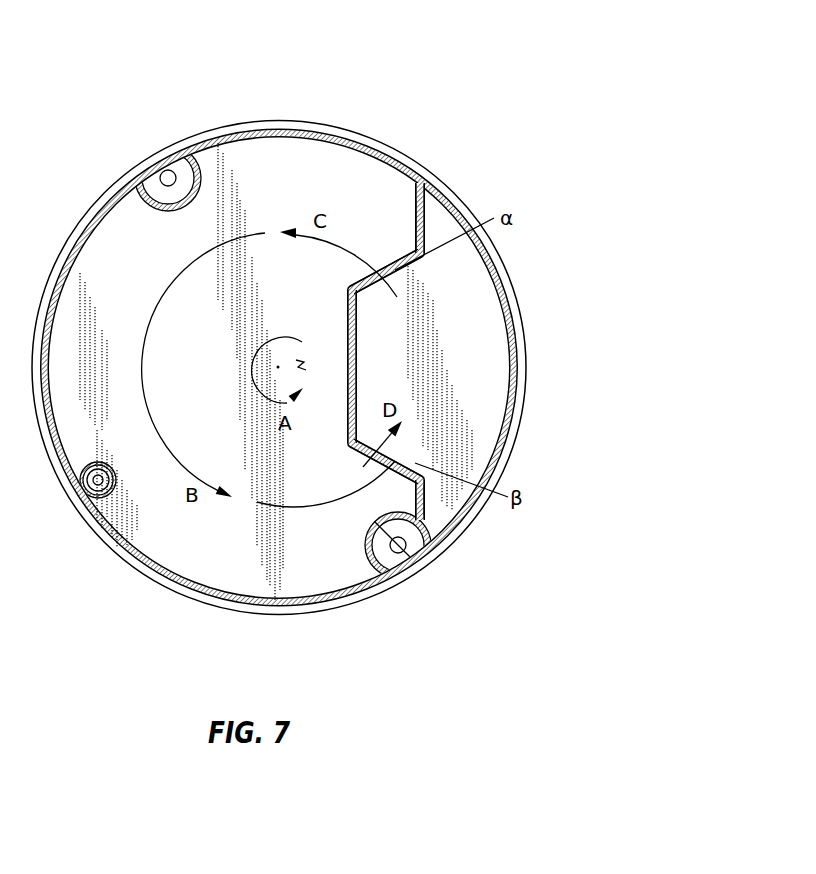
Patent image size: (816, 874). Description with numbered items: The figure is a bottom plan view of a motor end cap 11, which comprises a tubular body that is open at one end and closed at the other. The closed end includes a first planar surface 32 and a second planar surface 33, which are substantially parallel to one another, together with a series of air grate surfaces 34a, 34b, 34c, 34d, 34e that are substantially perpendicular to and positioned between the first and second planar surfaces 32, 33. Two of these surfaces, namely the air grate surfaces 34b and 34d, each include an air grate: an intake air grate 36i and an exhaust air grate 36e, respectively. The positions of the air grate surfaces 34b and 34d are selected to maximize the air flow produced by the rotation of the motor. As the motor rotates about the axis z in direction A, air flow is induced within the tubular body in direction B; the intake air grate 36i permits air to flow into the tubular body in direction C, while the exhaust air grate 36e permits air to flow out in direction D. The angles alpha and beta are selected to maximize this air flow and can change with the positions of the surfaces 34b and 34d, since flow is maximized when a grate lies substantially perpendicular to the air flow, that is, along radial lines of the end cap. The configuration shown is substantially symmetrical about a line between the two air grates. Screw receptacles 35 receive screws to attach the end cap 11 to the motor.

The end cap 11 is at (425, 62).
The first planar surface 32 is at (343, 188).
The second planar surface 33 is at (462, 278).
The air grate surface 34a is at (425, 205).
The air grate surface 34b is at (415, 167).
The air grate surface 34c is at (353, 367).
The air grate surface 34d is at (393, 463).
The air grate surface 34e is at (422, 498).
The screw receptacle 35 is at (193, 200).
The intake air grate 36i is at (388, 268).
The exhaust air grate 36e is at (400, 450).